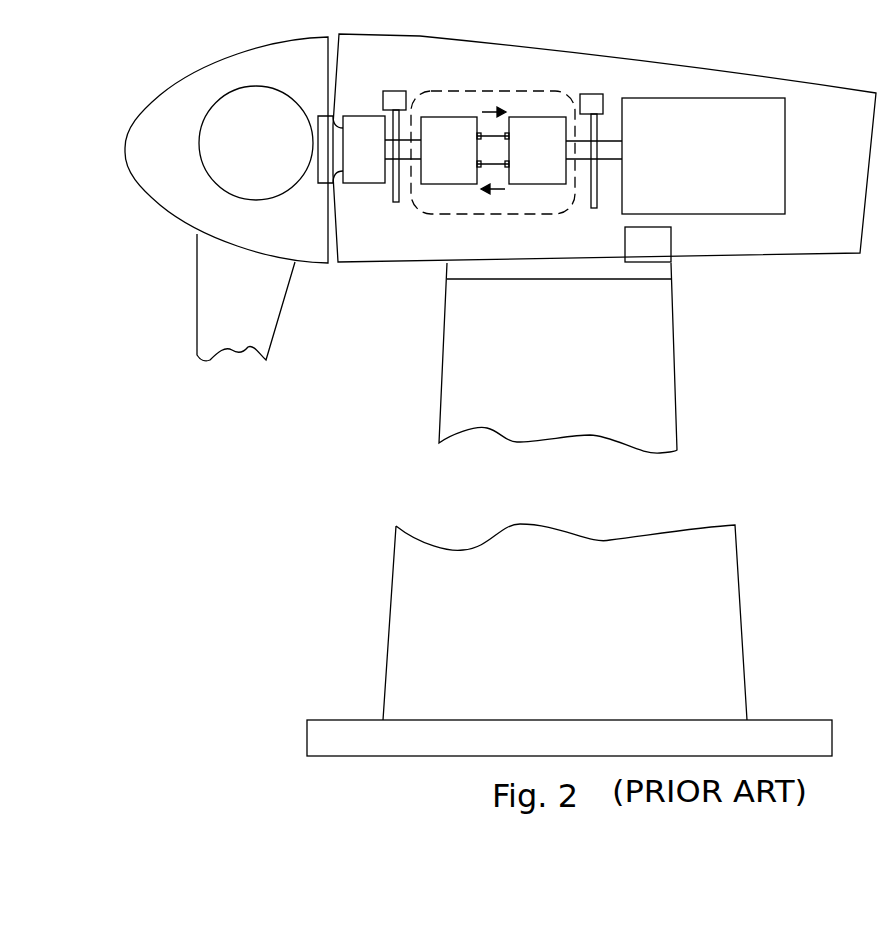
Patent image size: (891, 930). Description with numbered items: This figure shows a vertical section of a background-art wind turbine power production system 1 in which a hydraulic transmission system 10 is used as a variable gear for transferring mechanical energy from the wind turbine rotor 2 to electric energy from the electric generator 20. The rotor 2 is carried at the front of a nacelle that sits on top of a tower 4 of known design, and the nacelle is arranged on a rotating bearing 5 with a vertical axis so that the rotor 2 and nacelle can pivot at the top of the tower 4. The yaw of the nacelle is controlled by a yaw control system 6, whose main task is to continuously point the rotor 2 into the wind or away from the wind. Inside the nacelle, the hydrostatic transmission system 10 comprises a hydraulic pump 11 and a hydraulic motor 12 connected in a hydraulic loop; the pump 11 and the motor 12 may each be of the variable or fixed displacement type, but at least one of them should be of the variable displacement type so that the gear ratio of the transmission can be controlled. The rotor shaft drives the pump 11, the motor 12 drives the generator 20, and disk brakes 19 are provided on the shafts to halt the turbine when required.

The wind turbine power production system 1 is at (483, 148).
The wind turbine rotor 2 is at (225, 297).
The tower 4 is at (569, 509).
The rotating bearing 5 is at (672, 265).
The yaw control system 6 is at (648, 244).
The hydraulic transmission system 10 is at (460, 89).
The hydraulic pump 11 is at (449, 150).
The hydraulic motor 12 is at (537, 150).
The disk brakes 19 is at (494, 133).
The electric generator 20 is at (703, 156).